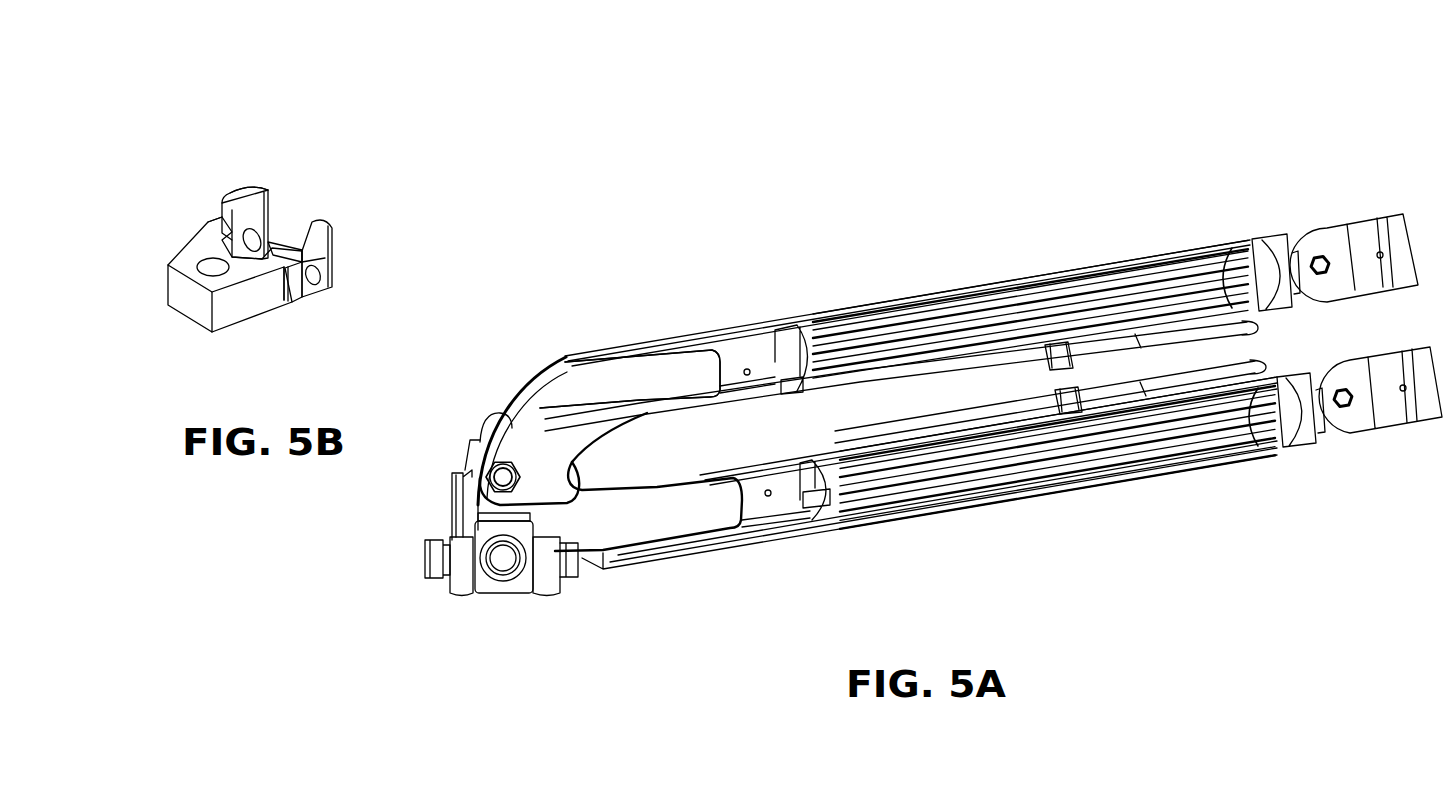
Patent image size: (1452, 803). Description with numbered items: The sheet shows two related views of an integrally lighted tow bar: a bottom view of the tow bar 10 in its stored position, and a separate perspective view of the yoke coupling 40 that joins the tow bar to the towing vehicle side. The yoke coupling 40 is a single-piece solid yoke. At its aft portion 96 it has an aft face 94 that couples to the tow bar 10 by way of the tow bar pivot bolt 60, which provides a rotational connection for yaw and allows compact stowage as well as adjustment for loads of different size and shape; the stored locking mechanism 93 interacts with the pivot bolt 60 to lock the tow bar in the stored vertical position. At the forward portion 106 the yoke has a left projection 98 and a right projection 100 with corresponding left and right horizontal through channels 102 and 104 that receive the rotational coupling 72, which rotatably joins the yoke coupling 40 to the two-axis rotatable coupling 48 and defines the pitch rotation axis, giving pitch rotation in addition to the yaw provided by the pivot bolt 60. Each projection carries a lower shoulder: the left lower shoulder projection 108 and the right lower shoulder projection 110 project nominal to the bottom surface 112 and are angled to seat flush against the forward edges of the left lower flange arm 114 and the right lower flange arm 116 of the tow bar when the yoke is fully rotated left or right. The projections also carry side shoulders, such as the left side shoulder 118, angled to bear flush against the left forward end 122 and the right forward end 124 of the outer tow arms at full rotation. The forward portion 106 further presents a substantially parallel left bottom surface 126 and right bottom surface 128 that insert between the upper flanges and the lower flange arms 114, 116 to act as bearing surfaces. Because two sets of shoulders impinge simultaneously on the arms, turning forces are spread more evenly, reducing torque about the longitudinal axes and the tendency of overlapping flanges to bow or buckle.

In FIG. 5A, the tow bar 10 is at (1058, 226).
In FIG. 5B, the yoke coupling 40 is at (240, 138).
In FIG. 5A, the yoke coupling 40 is at (400, 528).
In FIG. 5A, the two-axis rotatable coupling 48 is at (477, 600).
In FIG. 5A, the tow bar pivot bolt 60 is at (480, 467).
In FIG. 5A, the rotational coupling 72 is at (428, 560).
In FIG. 5A, the stored locking mechanism 93 is at (493, 421).
In FIG. 5B, the aft face 94 is at (172, 283).
In FIG. 5B, the aft portion 96 is at (172, 325).
In FIG. 5B, the left projection 98 is at (364, 222).
In FIG. 5B, the right projection 100 is at (320, 185).
In FIG. 5B, the left horizontal through channel 102 is at (266, 230).
In FIG. 5B, the right horizontal through channel 104 is at (312, 282).
In FIG. 5B, the forward portion 106 is at (328, 205).
In FIG. 5B, the left lower shoulder projection 108 is at (222, 215).
In FIG. 5B, the right lower shoulder projection 110 is at (263, 292).
In FIG. 5B, the bottom surface 112 is at (208, 238).
In FIG. 5A, the left lower flange arm 114 is at (683, 520).
In FIG. 5A, the right lower flange arm 116 is at (645, 386).
In FIG. 5B, the left side shoulder 118 is at (286, 300).
In FIG. 5A, the left forward end 122 is at (593, 580).
In FIG. 5A, the right forward end 124 is at (557, 366).
In FIG. 5B, the left bottom surface 126 is at (255, 187).
In FIG. 5B, the right bottom surface 128 is at (333, 232).